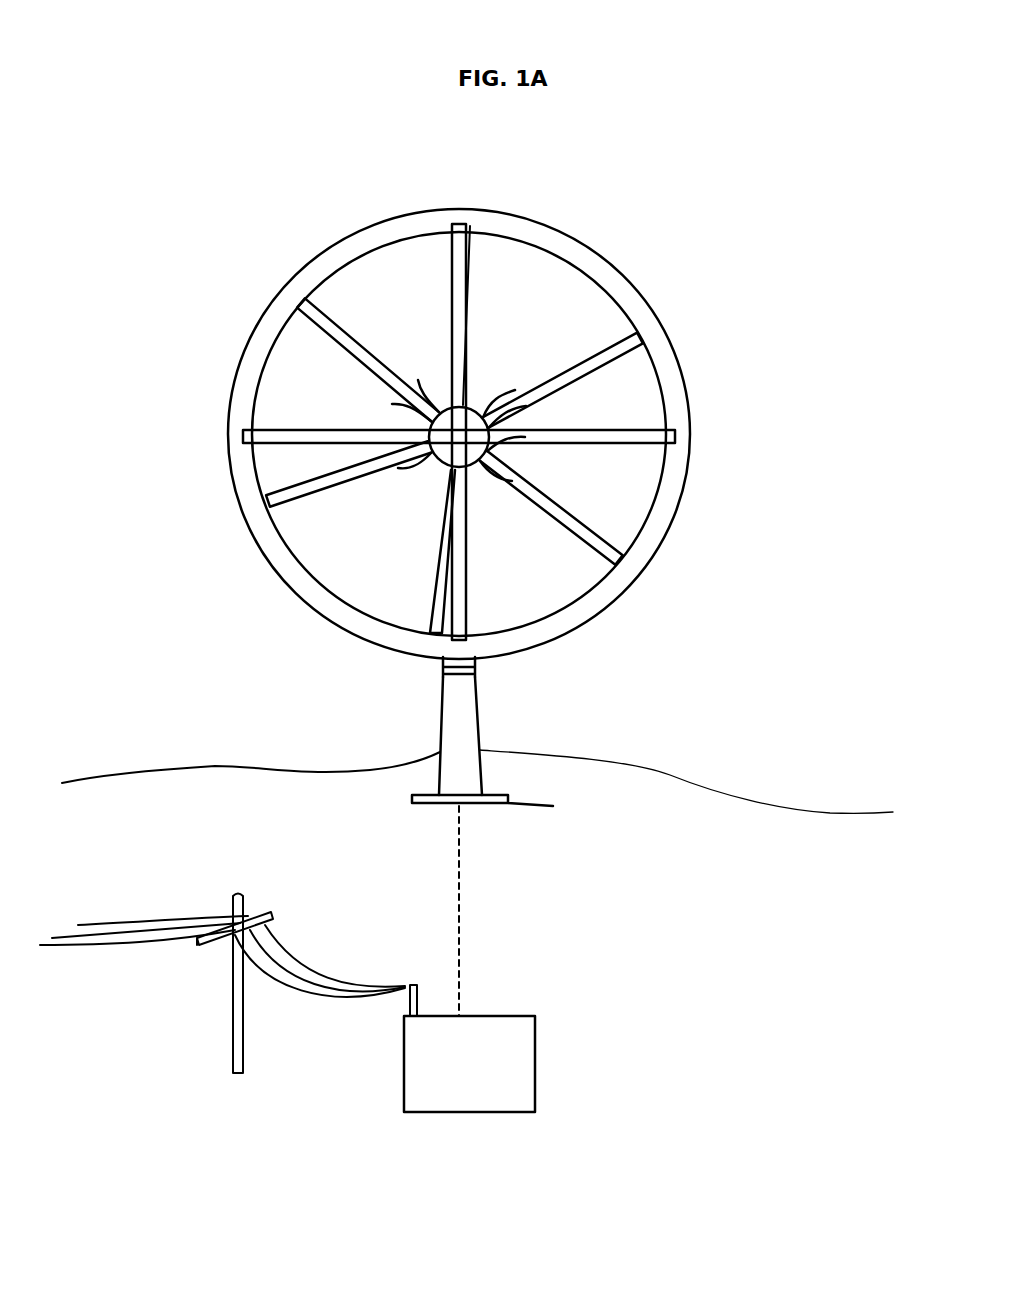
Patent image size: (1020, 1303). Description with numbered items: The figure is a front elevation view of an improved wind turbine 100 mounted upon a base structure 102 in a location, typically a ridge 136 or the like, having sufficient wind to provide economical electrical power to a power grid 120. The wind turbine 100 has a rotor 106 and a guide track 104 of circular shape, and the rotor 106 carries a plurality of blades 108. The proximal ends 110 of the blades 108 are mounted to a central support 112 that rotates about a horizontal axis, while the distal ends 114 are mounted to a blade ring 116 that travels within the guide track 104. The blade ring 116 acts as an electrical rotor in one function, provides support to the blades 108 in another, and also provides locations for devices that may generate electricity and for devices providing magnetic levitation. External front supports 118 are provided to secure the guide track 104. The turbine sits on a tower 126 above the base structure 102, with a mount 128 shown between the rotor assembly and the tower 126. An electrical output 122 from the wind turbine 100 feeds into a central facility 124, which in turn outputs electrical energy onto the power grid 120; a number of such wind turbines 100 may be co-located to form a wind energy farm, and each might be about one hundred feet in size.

The wind turbine 100 is at (765, 178).
The base structure 102 is at (497, 803).
The guide track 104 is at (688, 387).
The rotor 106 is at (537, 283).
The blades 108 is at (600, 345).
The proximal ends 110 is at (494, 480).
The central support 112 is at (482, 387).
The distal ends 114 is at (593, 556).
The blade ring 116 is at (344, 572).
The external front supports 118 is at (450, 276).
The power grid 120 is at (112, 893).
The electrical output 122 is at (459, 925).
The central facility 124 is at (438, 1067).
The tower 126 is at (478, 718).
The bearing mount 128 is at (443, 674).
The ridge 136 is at (229, 729).